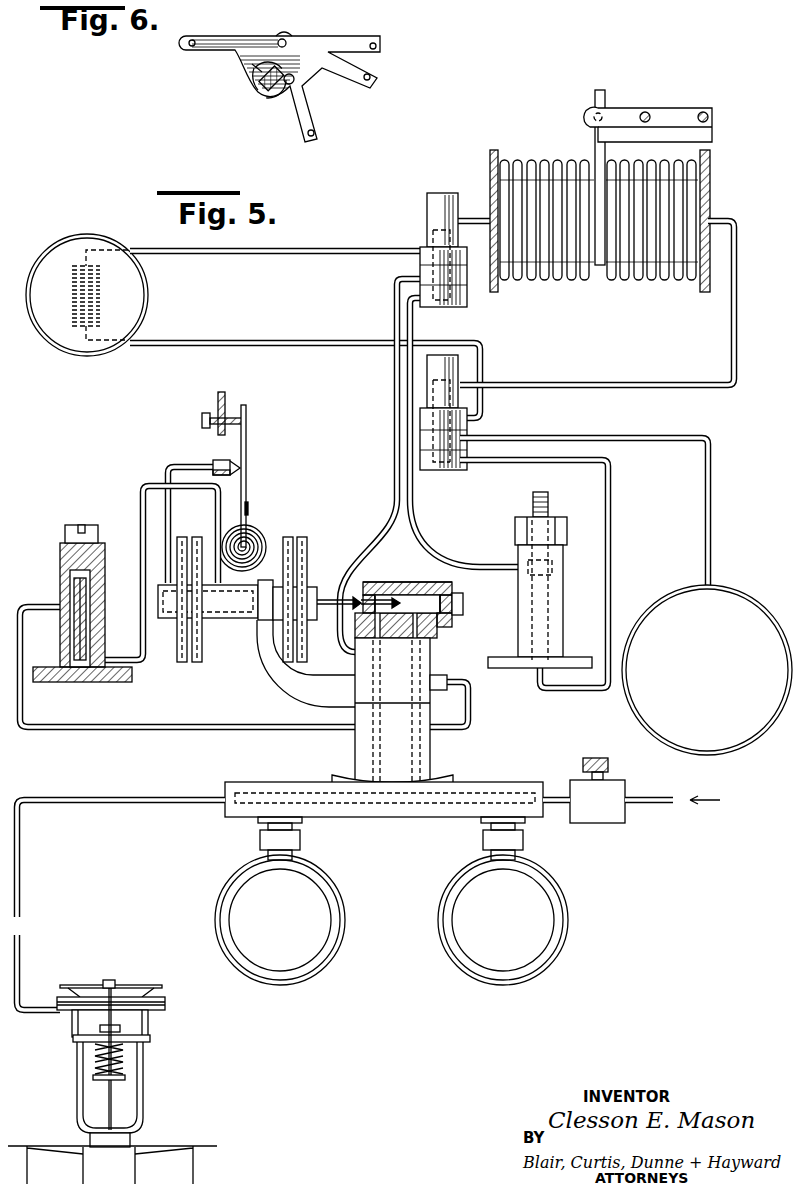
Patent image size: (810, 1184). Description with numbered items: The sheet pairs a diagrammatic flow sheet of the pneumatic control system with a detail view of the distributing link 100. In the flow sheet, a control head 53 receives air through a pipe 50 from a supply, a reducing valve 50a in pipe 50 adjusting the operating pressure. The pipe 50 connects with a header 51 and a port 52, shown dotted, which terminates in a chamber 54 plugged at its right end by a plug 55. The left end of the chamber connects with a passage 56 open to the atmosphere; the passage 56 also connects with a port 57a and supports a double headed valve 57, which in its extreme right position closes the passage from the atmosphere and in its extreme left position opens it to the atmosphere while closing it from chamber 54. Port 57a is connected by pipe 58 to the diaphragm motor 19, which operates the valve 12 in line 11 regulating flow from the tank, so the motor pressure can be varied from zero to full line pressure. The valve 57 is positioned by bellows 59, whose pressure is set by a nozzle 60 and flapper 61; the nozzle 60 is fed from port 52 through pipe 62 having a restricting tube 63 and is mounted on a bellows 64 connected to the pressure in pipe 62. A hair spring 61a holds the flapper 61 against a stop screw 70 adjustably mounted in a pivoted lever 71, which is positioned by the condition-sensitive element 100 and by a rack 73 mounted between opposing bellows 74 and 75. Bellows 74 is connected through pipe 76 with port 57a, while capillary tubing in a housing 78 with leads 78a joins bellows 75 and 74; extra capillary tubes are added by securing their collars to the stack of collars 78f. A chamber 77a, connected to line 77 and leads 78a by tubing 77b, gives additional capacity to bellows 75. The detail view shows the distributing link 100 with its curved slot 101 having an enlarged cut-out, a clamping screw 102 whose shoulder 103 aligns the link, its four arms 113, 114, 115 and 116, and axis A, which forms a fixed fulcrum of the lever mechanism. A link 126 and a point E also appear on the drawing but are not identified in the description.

In FIG. 6, the distributing link 100 is at (216, 52).
In FIG. 6, the curved slot 101 is at (256, 72).
In FIG. 6, the screw 102 is at (283, 92).
In FIG. 6, the shoulder 103 is at (266, 88).
In FIG. 6, the arm 113 is at (380, 43).
In FIG. 6, the arm 114 is at (377, 78).
In FIG. 6, the arm 115 is at (318, 133).
In FIG. 6, the arm 116 is at (186, 50).
In FIG. 6, the axis A is at (280, 34).
In FIG. 5, the line 11 is at (207, 1148).
In FIG. 5, the valve 12 is at (120, 1158).
In FIG. 5, the diaphragm motor 19 is at (140, 984).
In FIG. 5, the pipe 50 is at (666, 804).
In FIG. 5, the reducing valve 50a is at (600, 824).
In FIG. 5, the header 51 is at (395, 818).
In FIG. 5, the port 52 is at (432, 752).
In FIG. 5, the control head 53 is at (442, 580).
In FIG. 5, the chamber 54 is at (437, 628).
In FIG. 5, the plug 55 is at (463, 605).
In FIG. 5, the passage 56 is at (380, 582).
In FIG. 5, the double headed valve 57 is at (399, 596).
In FIG. 5, the port 57a is at (360, 680).
In FIG. 5, the pipe 58 is at (161, 802).
In FIG. 5, the bellows 59 is at (298, 542).
In FIG. 5, the nozzle 60 is at (216, 460).
In FIG. 5, the flapper 61 is at (247, 437).
In FIG. 5, the hair spring 61a is at (266, 540).
In FIG. 5, the pipe 62 is at (138, 492).
In FIG. 5, the restricting tube 63 is at (60, 578).
In FIG. 5, the bellows 64 is at (186, 664).
In FIG. 5, the stop screw 70 is at (202, 420).
In FIG. 5, the pivoted lever 71 is at (228, 402).
In FIG. 5, the rack 73 is at (595, 141).
In FIG. 5, the bellows 74 is at (551, 283).
In FIG. 5, the bellows 75 is at (644, 284).
In FIG. 5, the pipe 76 is at (476, 220).
In FIG. 5, the line 77 is at (603, 384).
In FIG. 5, the chamber 77a is at (742, 722).
In FIG. 5, the tubing 77b is at (710, 518).
In FIG. 5, the housing 78 is at (60, 250).
In FIG. 5, the leads 78a is at (232, 256).
In FIG. 5, the stack of collars 78f is at (467, 300).
In FIG. 5, the link 126 is at (669, 116).
In FIG. 5, the lever E is at (594, 108).